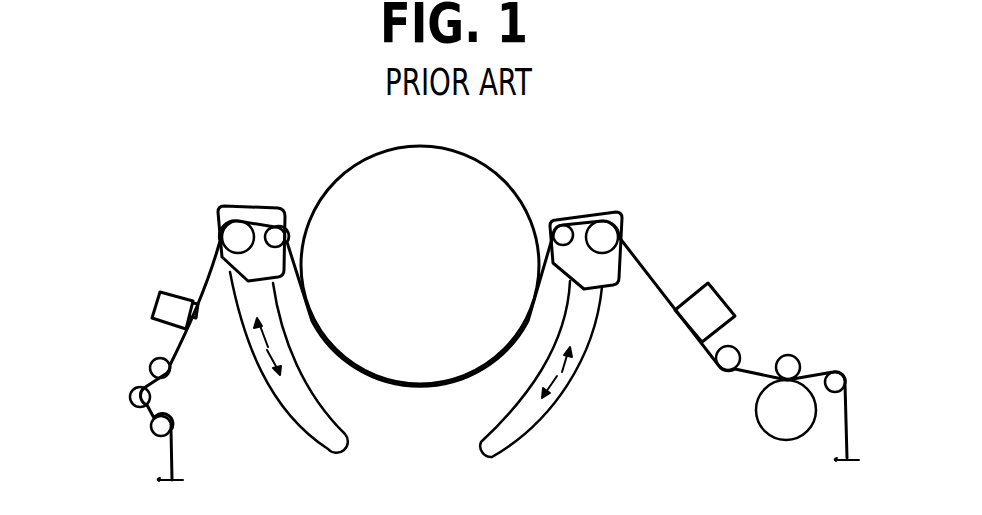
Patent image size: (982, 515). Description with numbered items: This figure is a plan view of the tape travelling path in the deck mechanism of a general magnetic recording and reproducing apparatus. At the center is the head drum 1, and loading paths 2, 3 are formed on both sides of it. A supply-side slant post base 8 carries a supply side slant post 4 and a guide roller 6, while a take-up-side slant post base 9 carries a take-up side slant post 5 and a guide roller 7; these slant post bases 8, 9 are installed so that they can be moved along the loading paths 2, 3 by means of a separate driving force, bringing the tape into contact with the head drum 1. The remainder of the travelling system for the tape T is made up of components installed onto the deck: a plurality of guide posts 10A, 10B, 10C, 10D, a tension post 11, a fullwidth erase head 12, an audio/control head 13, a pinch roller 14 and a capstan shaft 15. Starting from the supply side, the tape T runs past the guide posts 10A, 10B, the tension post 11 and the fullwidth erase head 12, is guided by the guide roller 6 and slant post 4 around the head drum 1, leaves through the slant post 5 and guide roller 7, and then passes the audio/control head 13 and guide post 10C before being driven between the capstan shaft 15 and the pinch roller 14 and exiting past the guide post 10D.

The head drum 1 is at (498, 187).
The loading path 2 is at (340, 438).
The loading path 3 is at (537, 417).
The supply side slant post 4 is at (281, 226).
The take-up side slant post 5 is at (562, 227).
The guide roller 6 is at (234, 236).
The guide roller 7 is at (618, 213).
The slant post base 8 is at (244, 207).
The slant post base 9 is at (593, 222).
The guide post 10A is at (155, 425).
The guide post 10B is at (148, 362).
The guide post 10C is at (718, 369).
The guide post 10D is at (836, 375).
The tension post 11 is at (132, 396).
The fullwidth erase head 12 is at (165, 311).
The audio/control head 13 is at (714, 287).
The pinch roller 14 is at (763, 424).
The capstan shaft 15 is at (785, 358).
The tape T is at (203, 289).